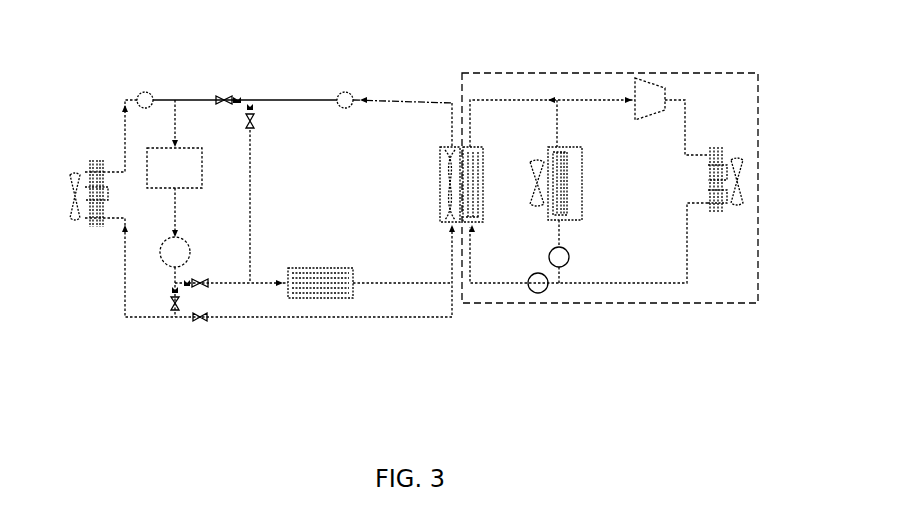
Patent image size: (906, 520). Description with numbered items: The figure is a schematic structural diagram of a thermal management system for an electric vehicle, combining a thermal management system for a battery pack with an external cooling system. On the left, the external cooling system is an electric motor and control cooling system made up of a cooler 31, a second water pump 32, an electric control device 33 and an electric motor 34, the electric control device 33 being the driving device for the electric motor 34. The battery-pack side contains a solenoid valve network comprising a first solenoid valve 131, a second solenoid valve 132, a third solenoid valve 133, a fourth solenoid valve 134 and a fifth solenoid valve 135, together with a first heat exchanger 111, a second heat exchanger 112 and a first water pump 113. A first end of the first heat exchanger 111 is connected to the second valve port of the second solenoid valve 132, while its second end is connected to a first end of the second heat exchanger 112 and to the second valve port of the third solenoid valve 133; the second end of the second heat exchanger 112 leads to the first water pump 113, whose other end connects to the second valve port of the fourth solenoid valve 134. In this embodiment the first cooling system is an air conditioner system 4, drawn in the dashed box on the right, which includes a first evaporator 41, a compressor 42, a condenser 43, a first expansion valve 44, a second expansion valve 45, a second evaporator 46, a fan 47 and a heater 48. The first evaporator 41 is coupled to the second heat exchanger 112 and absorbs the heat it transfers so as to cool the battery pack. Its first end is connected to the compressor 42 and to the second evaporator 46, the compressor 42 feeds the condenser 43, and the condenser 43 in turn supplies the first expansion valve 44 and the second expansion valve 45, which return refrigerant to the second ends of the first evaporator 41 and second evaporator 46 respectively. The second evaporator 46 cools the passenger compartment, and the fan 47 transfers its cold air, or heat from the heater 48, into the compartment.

The air conditioner system 4 is at (610, 73).
The cooler 31 is at (82, 217).
The second water pump 32 is at (150, 92).
The electric control device 33 is at (185, 148).
The electric motor 34 is at (163, 261).
The first evaporator 41 is at (477, 145).
The compressor 42 is at (650, 83).
The condenser 43 is at (728, 157).
The first expansion valve 44 is at (540, 293).
The second expansion valve 45 is at (564, 265).
The second evaporator 46 is at (561, 217).
The fan 47 is at (537, 207).
The heater 48 is at (577, 187).
The first heat exchanger 111 is at (339, 299).
The second heat exchanger 112 is at (443, 145).
The first water pump 113 is at (351, 95).
The first solenoid valve 131 is at (176, 309).
The second solenoid valve 132 is at (202, 284).
The third solenoid valve 133 is at (201, 318).
The fourth solenoid valve 134 is at (227, 98).
The fifth solenoid valve 135 is at (252, 120).